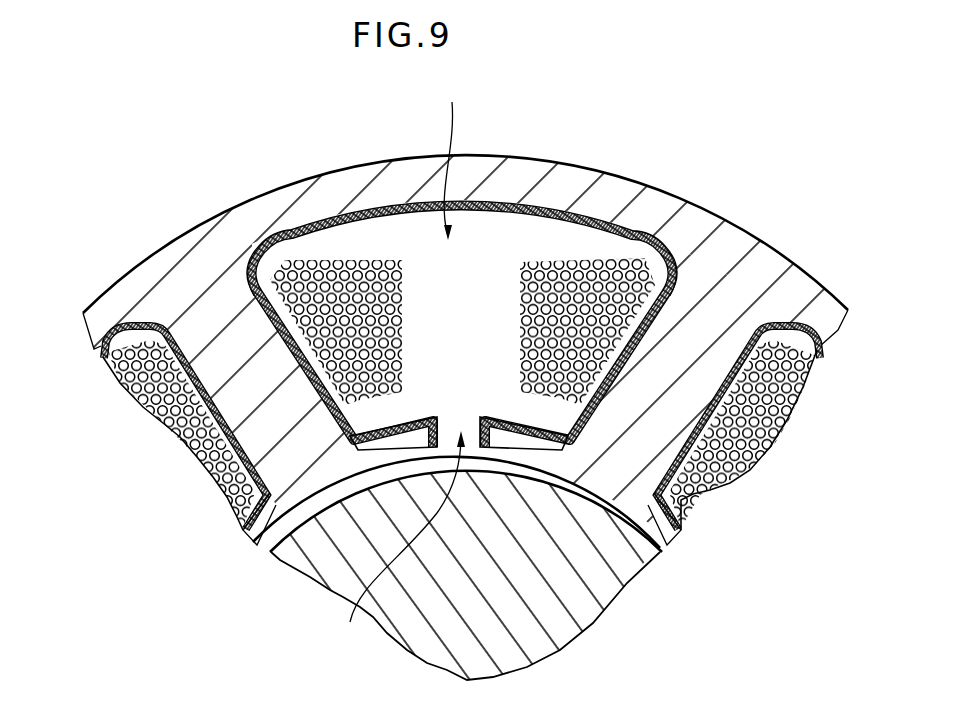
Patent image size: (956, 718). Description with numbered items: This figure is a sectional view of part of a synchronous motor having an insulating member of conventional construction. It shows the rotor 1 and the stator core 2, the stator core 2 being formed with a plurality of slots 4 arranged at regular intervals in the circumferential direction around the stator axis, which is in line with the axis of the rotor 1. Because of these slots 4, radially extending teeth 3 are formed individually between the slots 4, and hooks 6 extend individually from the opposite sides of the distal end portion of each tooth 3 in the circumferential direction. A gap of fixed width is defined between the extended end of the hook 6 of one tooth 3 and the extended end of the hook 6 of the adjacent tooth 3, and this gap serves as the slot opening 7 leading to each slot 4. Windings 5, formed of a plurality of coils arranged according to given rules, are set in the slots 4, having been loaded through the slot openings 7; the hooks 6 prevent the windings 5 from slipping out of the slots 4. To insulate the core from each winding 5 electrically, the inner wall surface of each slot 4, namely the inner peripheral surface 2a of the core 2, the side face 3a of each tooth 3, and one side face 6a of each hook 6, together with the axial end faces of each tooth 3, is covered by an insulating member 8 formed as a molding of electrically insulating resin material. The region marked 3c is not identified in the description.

The rotor 1 is at (568, 581).
The stator core 2 is at (545, 180).
The inner peripheral surface 2a is at (386, 218).
The tooth 3 is at (250, 382).
The side face 3a is at (287, 278).
The insulating liner corner portion 3c is at (675, 252).
The slot 4 is at (456, 153).
The winding 5 is at (312, 273).
The hook 6 is at (403, 440).
The side face of hook 6a is at (493, 415).
The slot opening 7 is at (398, 549).
The insulating member 8 is at (500, 200).